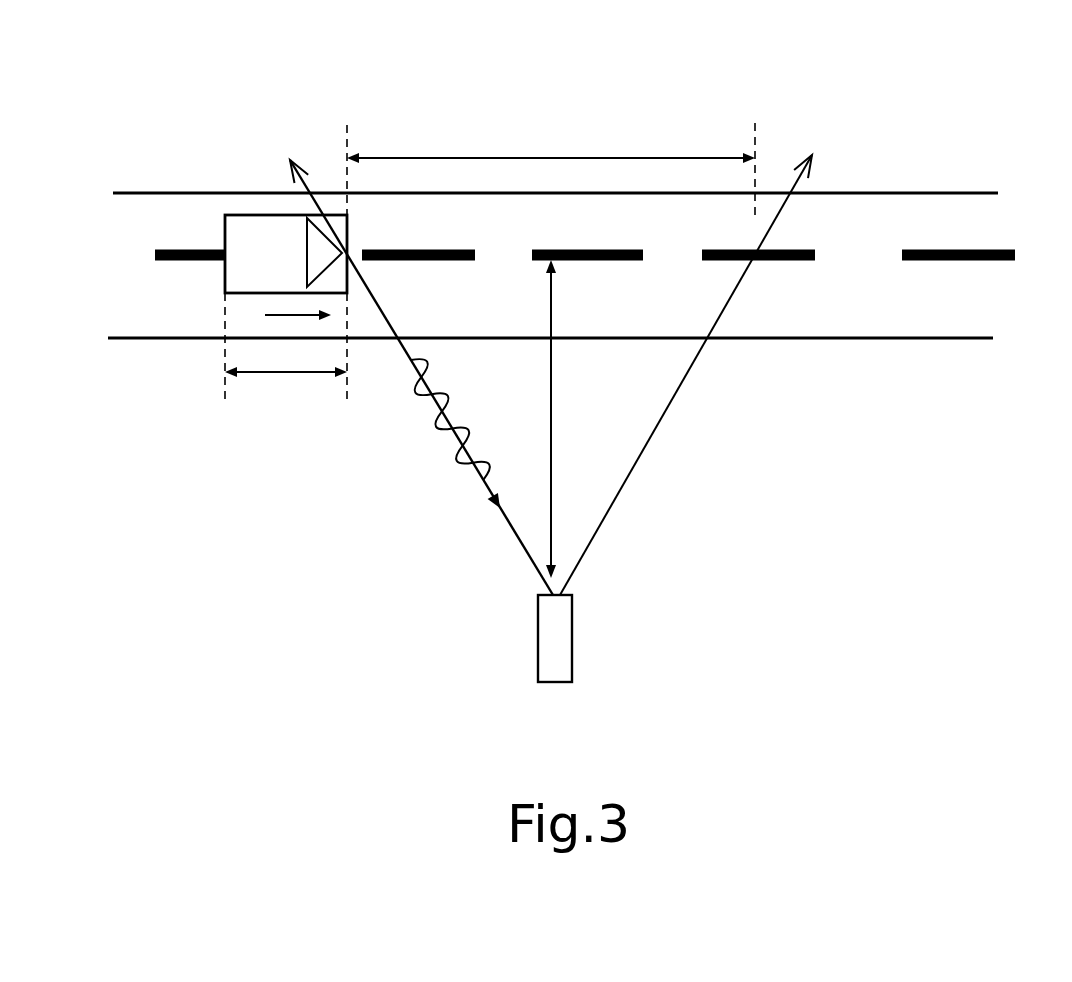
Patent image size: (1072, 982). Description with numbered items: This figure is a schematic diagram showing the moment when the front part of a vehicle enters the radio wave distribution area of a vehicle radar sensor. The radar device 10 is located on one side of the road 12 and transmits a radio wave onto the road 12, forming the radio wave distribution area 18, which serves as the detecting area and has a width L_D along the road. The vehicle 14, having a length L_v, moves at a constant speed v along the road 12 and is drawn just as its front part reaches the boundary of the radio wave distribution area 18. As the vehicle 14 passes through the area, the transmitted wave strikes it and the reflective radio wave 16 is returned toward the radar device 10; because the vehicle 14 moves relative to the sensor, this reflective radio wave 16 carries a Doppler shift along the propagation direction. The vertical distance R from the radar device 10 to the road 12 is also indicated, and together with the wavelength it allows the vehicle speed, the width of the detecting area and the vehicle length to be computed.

The radar device 10 is at (572, 642).
The road 12 is at (968, 193).
The vehicle 14 is at (237, 215).
The reflective radio wave 16 is at (410, 408).
The radio wave distribution area 18 is at (688, 217).